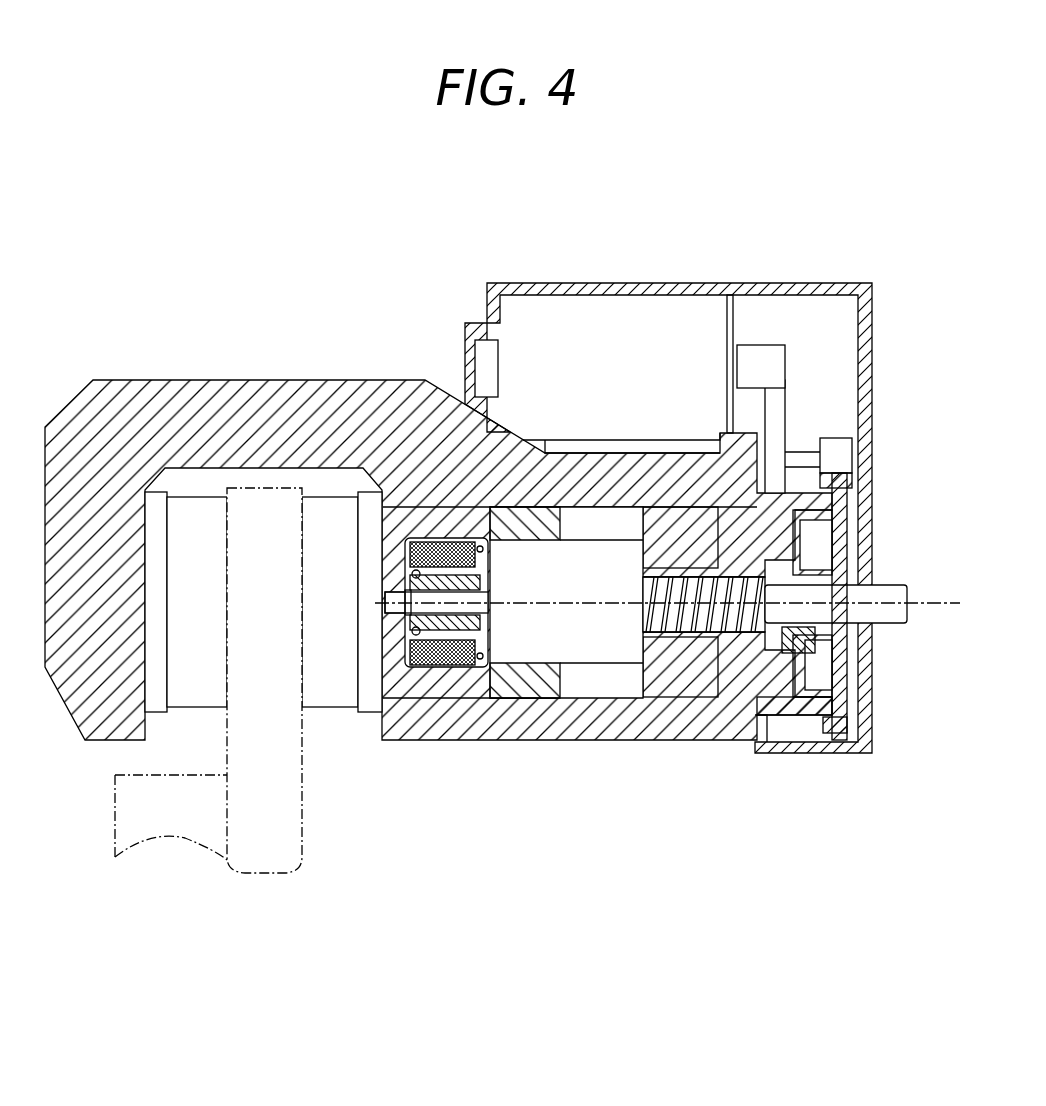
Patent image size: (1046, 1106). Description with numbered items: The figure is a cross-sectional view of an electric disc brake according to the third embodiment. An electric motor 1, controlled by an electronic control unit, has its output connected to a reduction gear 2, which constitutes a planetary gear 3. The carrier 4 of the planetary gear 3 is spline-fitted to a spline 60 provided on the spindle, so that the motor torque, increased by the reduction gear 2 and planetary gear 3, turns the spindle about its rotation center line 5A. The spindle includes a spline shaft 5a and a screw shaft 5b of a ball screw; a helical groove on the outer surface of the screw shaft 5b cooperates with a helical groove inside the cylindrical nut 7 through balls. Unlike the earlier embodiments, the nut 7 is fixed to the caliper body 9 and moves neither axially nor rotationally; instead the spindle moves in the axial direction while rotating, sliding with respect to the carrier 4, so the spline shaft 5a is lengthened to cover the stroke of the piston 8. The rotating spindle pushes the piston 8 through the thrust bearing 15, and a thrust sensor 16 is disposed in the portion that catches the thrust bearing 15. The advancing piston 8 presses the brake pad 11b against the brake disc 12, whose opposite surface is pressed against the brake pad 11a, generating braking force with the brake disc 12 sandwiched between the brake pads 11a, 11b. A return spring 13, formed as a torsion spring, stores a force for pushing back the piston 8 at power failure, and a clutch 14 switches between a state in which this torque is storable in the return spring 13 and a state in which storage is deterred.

The electric motor 1 is at (627, 312).
The reduction gear 2 is at (777, 410).
The planetary gear 3 is at (850, 572).
The carrier 4 is at (830, 525).
The spline shaft 5a is at (870, 723).
The screw shaft 5b is at (692, 635).
The rotation center line 5A is at (930, 605).
The nut 7 is at (545, 562).
The piston 8 is at (420, 520).
The caliper body 9 is at (210, 380).
The brake pad 11a is at (340, 695).
The brake pad 11b is at (193, 695).
The brake disc 12 is at (265, 870).
The return spring 13 is at (457, 645).
The clutch 14 is at (415, 655).
The thrust bearing 15 is at (405, 655).
The thrust sensor 16 is at (673, 528).
The spline 60 is at (780, 707).